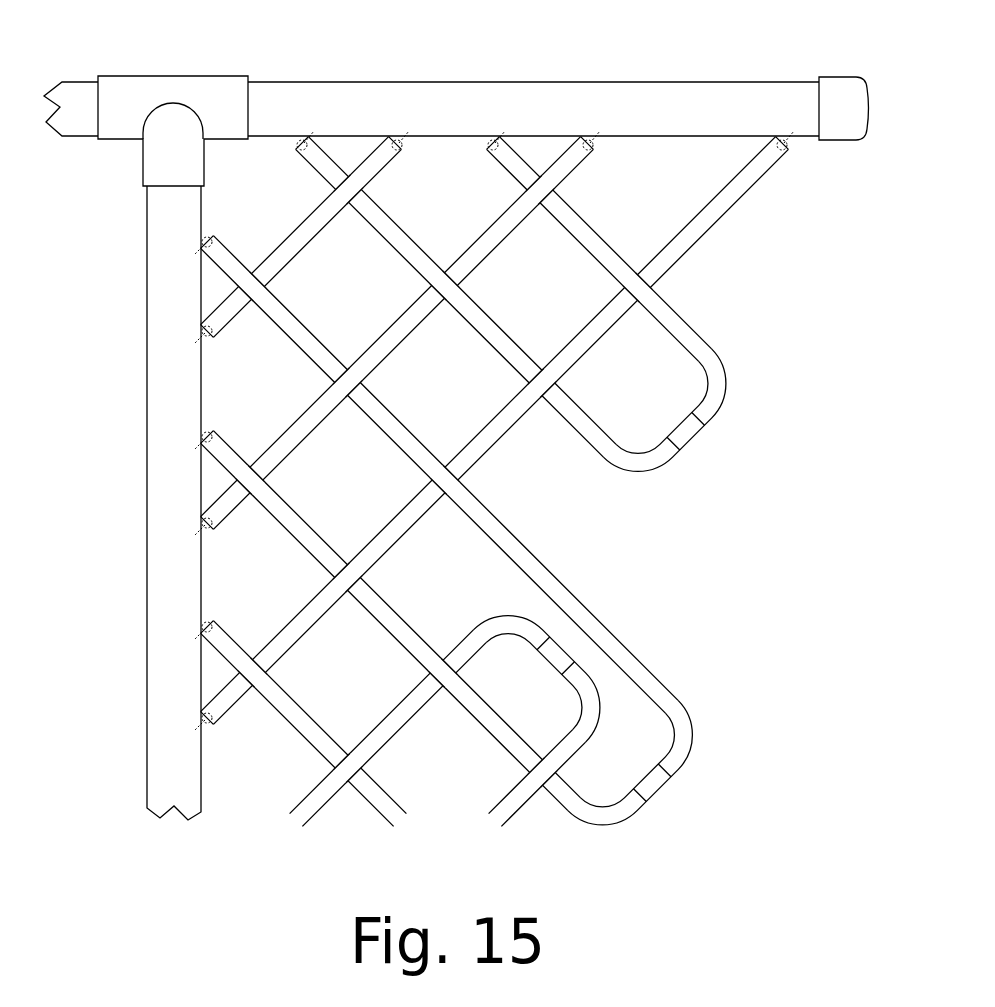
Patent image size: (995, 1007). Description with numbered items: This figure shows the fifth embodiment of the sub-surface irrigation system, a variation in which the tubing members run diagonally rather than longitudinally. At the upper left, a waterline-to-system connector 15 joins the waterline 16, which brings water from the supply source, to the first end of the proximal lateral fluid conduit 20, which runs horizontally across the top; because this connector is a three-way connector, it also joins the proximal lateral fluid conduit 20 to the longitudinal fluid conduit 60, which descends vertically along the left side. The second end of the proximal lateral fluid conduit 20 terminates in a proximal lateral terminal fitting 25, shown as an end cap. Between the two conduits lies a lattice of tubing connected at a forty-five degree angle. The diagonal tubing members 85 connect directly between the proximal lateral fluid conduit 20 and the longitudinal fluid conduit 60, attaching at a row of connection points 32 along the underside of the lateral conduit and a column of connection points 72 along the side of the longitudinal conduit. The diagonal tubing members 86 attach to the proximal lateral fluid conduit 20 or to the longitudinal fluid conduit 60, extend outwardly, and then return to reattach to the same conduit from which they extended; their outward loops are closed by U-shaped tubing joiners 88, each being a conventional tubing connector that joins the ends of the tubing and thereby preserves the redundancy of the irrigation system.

The waterline-to-system connector 15 is at (175, 134).
The waterline 16 is at (79, 108).
The proximal lateral fluid conduit 20 is at (377, 103).
The proximal lateral terminal fitting 25 is at (838, 93).
The rail clip 32 is at (288, 142).
The longitudinal fluid conduit 60 is at (167, 345).
The post clip 72 is at (207, 337).
The diagonal tubing members 85 is at (303, 243).
The diagonal tubing members 86 is at (385, 228).
The tubing joiner 88 is at (687, 432).